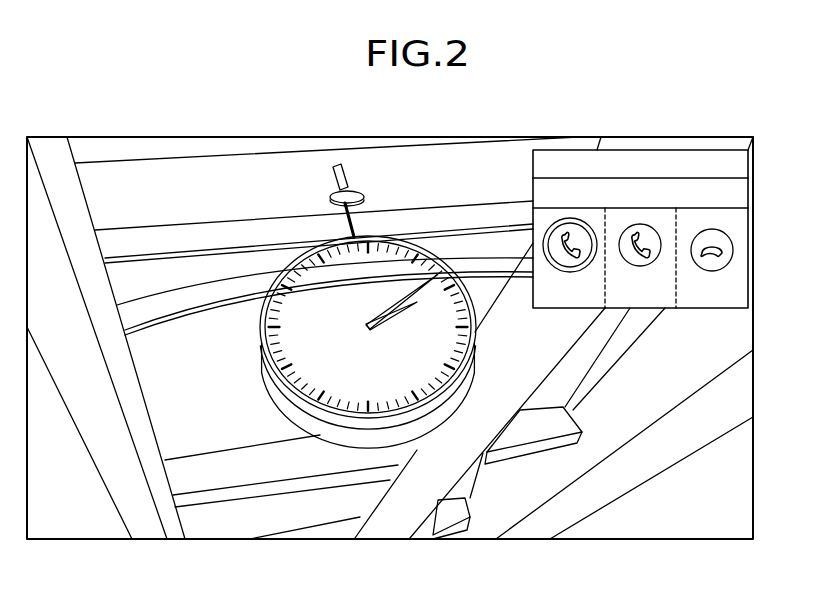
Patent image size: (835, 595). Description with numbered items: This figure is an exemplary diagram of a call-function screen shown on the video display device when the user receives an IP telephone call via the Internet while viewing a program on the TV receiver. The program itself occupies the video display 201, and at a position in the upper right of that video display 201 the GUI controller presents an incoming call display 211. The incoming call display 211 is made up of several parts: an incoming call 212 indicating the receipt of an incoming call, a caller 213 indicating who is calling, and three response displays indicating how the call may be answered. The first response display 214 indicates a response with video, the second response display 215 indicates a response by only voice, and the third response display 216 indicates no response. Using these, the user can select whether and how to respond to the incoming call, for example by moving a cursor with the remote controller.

The video display 201 is at (753, 472).
The incoming call display 211 is at (659, 232).
The incoming call 212 is at (655, 155).
The caller 213 is at (715, 190).
The first response display 214 is at (540, 277).
The second response display 215 is at (637, 305).
The third response display 216 is at (749, 280).